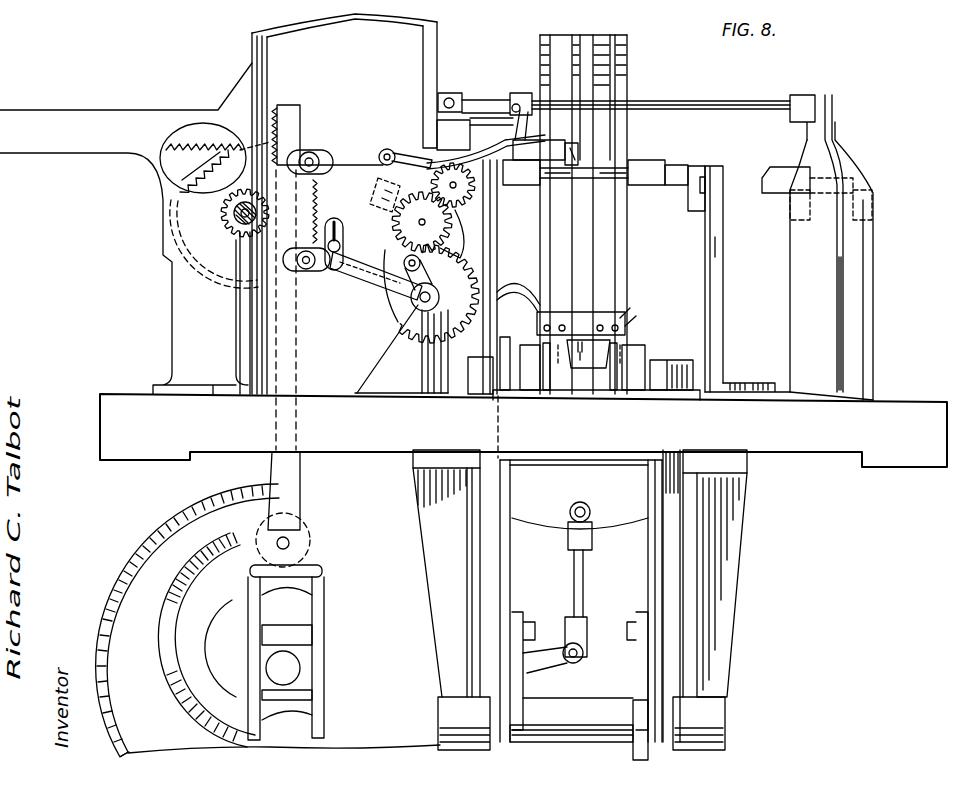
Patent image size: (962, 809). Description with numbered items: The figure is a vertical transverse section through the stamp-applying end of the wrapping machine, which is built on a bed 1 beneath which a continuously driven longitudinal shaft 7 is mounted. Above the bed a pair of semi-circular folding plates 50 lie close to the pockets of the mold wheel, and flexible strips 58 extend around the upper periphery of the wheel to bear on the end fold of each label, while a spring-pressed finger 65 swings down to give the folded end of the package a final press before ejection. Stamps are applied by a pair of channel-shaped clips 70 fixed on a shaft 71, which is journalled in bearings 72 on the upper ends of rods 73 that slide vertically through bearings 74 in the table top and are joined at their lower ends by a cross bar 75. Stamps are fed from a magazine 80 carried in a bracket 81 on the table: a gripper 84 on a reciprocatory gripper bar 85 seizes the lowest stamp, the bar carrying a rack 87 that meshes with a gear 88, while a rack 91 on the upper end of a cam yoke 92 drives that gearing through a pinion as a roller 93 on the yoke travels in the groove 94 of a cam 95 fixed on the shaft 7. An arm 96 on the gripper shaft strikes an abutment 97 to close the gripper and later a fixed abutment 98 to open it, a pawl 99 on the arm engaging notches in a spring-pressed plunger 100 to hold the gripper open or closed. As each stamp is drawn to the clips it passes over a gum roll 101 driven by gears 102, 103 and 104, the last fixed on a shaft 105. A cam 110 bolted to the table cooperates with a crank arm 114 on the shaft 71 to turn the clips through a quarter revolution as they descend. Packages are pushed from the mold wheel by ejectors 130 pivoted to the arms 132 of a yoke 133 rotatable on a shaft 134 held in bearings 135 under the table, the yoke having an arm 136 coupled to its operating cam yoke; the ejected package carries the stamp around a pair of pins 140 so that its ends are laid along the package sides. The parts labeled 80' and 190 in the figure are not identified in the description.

The bed 1 is at (893, 363).
The longitudinal shaft 7 is at (270, 668).
The folding plates 50 is at (628, 82).
The flexible strips 58 is at (597, 40).
The finger 65 is at (556, 352).
The clips 70 is at (532, 186).
The shaft 71 is at (588, 180).
The bearings 72 is at (675, 165).
The rods 73 is at (492, 262).
The bearings 74 is at (690, 377).
The cross bar 75 is at (602, 522).
The magazine 80 is at (344, 204).
The pinion 80' is at (229, 218).
The bracket 81 is at (148, 98).
The gripper 84 is at (462, 156).
The gripper bar 85 is at (475, 130).
The rack 87 is at (190, 147).
The gear 88 is at (198, 160).
The rack 91 is at (245, 175).
The cam yoke 92 is at (304, 103).
The roller 93 is at (300, 525).
The groove 94 is at (192, 590).
The cam 95 is at (112, 598).
The arm 96 is at (525, 95).
The abutment 97 is at (512, 102).
The fixed abutment 98 is at (773, 178).
The pawl 99 is at (575, 150).
The spring pressed plunger 100 is at (580, 158).
The gum roll 101 is at (378, 186).
The gear 102 is at (427, 210).
The gear 103 is at (410, 224).
The gear 104 is at (402, 275).
The shaft 105 is at (425, 300).
The cam 110 is at (725, 268).
The crank arm 114 is at (705, 185).
The ejectors 130 is at (538, 330).
The arms 132 is at (512, 568).
The yoke 133 is at (598, 703).
The shaft 134 is at (683, 717).
The bearings 135 is at (428, 497).
The arm 136 is at (630, 757).
The pins 140 is at (605, 385).
The shaft 190 is at (236, 212).